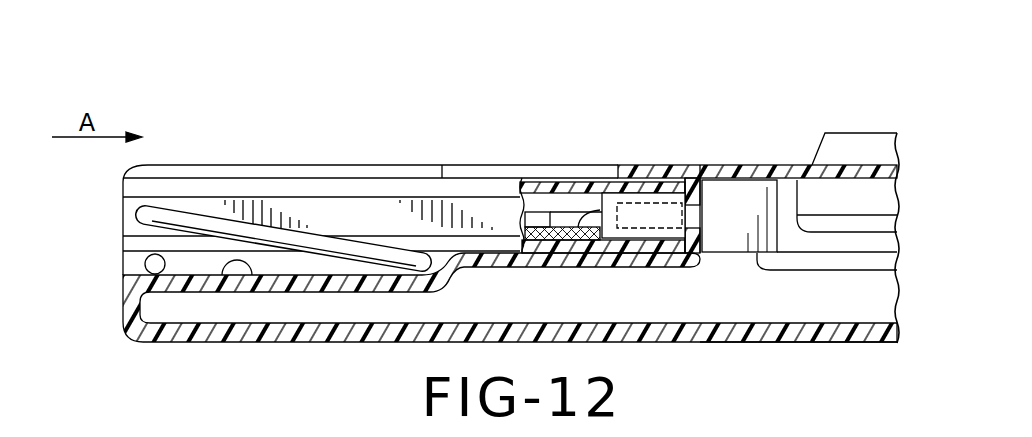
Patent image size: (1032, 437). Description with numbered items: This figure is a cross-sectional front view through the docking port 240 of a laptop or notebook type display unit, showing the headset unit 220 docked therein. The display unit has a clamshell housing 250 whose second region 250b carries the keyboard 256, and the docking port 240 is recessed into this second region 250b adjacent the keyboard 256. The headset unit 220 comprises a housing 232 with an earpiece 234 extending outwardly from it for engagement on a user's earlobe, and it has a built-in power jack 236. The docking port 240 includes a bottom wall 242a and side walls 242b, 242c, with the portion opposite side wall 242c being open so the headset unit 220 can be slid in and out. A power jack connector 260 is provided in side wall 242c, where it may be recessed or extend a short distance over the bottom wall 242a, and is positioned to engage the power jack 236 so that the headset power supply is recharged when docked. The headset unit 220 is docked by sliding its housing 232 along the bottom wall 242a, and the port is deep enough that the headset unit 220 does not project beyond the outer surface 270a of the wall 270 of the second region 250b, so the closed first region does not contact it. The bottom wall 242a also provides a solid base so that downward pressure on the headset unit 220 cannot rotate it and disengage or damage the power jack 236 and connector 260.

The headset unit 220 is at (120, 222).
The housing 232 is at (302, 207).
The earpiece 234 is at (185, 217).
The power jack 236 is at (645, 198).
The docking port 240 is at (343, 160).
The bottom wall 242a is at (240, 266).
The side wall 242b is at (400, 170).
The side wall 242c is at (682, 232).
The housing 250 is at (818, 344).
The second region 250b is at (742, 346).
The keyboard 256 is at (842, 123).
The power jack connector 260 is at (738, 198).
The wall 270 is at (866, 167).
The outer surface 270a is at (783, 163).